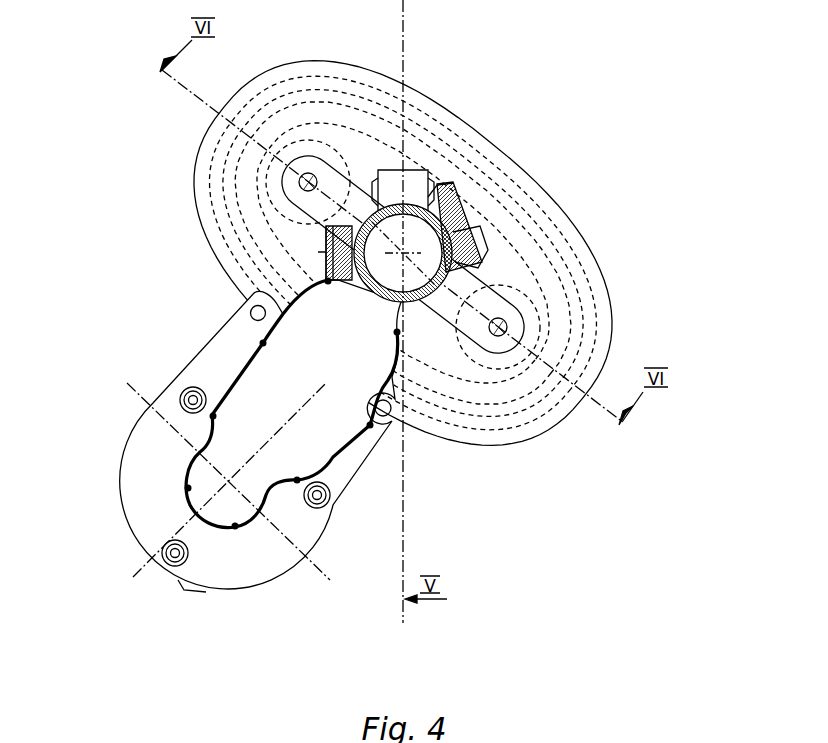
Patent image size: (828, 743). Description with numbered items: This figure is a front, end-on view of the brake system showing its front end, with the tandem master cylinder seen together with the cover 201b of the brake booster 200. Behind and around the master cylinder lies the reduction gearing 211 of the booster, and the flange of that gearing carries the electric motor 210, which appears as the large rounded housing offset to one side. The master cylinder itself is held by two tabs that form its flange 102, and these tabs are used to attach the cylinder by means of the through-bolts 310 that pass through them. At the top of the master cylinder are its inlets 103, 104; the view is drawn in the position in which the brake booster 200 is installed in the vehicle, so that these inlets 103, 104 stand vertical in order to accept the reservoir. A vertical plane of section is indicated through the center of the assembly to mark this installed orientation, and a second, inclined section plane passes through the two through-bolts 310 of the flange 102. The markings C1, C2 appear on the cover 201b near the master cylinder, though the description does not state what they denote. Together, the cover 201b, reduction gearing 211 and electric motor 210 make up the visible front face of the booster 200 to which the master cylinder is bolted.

The brake booster 200 is at (440, 253).
The cover 201b is at (589, 185).
The electric motor 210 is at (233, 435).
The reduction gearing 211 is at (243, 377).
The through-bolts 310 is at (408, 265).
The flange 102 is at (283, 187).
The inlet 103 is at (418, 170).
The inlet 104 is at (457, 144).
The hub center axis C1 is at (478, 210).
The hub center axis C2 is at (456, 216).